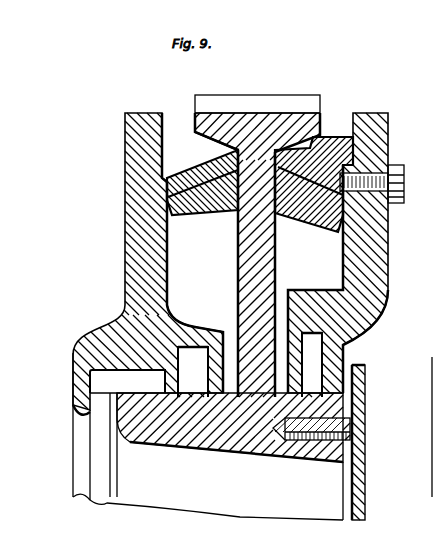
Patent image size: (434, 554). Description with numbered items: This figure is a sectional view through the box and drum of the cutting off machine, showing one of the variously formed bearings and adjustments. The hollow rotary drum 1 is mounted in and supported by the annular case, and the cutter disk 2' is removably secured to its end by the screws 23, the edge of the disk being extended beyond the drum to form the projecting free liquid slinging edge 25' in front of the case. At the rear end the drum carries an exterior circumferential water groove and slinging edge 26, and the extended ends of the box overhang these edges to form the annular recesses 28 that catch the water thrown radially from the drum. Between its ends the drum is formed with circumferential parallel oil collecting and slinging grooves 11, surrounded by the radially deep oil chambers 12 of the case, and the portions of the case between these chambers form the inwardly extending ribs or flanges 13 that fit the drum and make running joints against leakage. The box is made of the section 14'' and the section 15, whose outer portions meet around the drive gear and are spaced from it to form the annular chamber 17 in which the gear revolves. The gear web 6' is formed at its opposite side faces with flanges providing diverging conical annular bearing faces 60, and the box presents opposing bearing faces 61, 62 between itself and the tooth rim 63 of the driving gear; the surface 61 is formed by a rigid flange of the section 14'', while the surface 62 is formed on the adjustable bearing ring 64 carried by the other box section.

The hollow rotary drum 1 is at (240, 450).
The cutter disk 2' is at (373, 442).
The gear web 6' is at (257, 255).
The oil collecting and slinging grooves 11 is at (197, 398).
The oil chambers 12 is at (187, 347).
The ribs or flanges 13 is at (223, 332).
The box section 14'' is at (146, 261).
The box section 15 is at (380, 237).
The annular chamber 17 is at (332, 133).
The screws 23 is at (307, 455).
The liquid slinging edge 25' is at (376, 372).
The water annular groove and slinging edge 26 is at (130, 440).
The annular recesses 28 is at (102, 382).
The conical annular bearing faces 60 is at (203, 214).
The bearing face 61 is at (192, 162).
The bearing face 62 is at (357, 163).
The tooth rim 63 is at (297, 112).
The adjustable bearing ring 64 is at (406, 184).